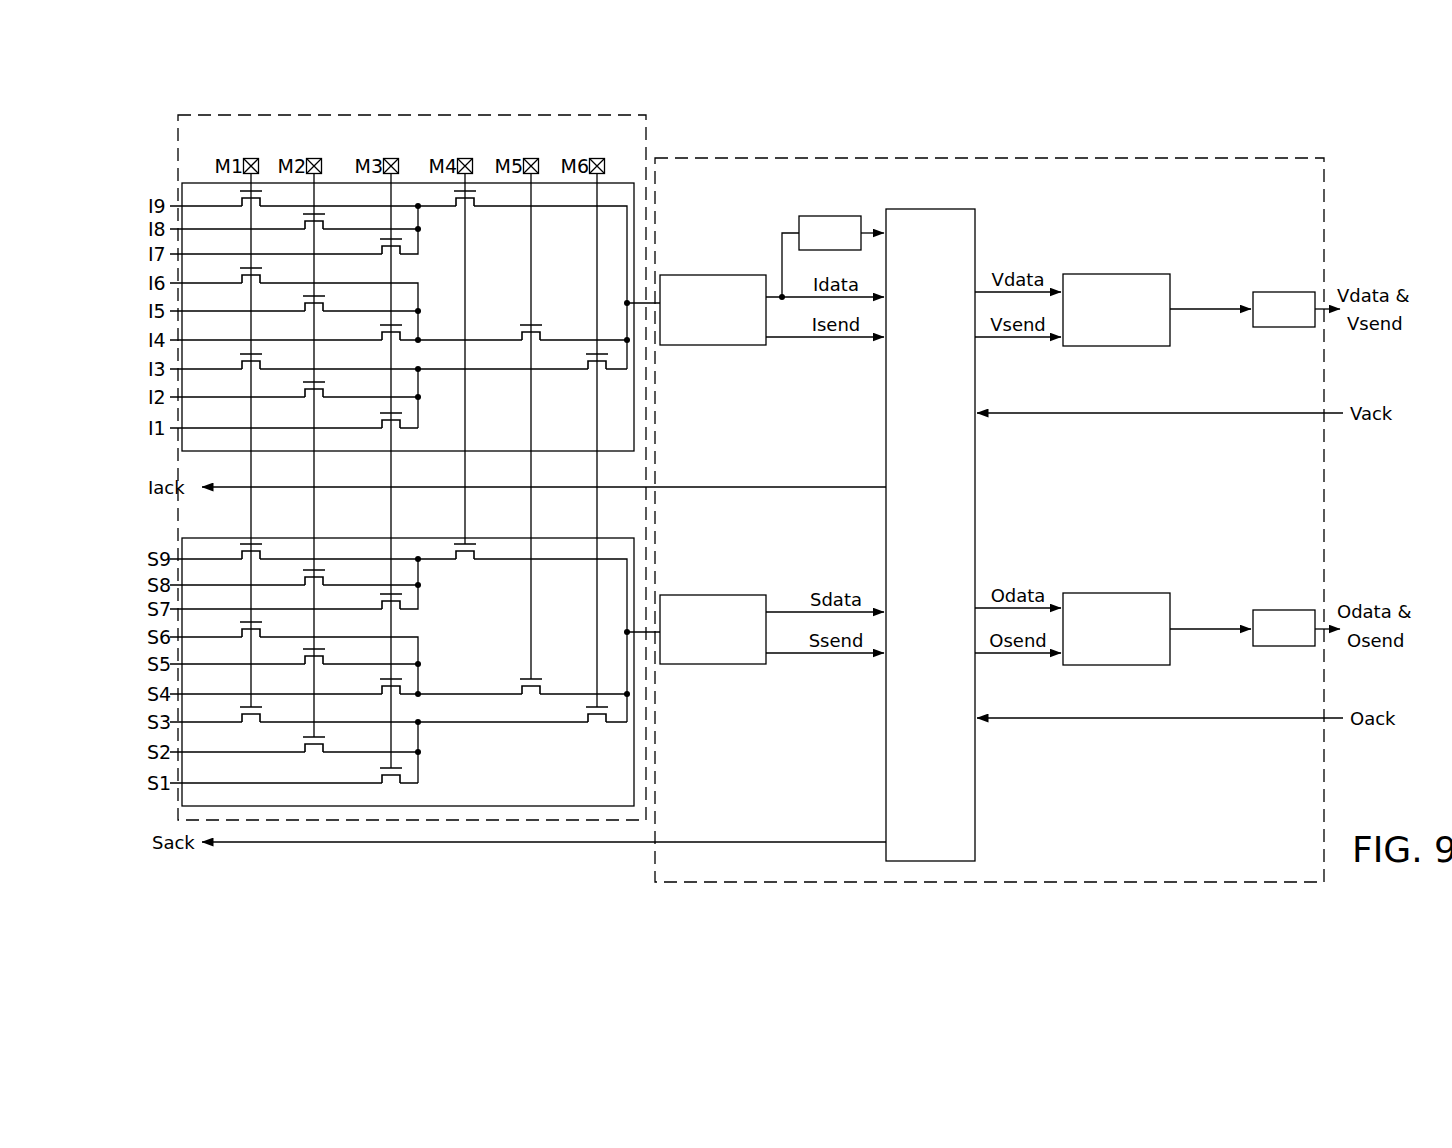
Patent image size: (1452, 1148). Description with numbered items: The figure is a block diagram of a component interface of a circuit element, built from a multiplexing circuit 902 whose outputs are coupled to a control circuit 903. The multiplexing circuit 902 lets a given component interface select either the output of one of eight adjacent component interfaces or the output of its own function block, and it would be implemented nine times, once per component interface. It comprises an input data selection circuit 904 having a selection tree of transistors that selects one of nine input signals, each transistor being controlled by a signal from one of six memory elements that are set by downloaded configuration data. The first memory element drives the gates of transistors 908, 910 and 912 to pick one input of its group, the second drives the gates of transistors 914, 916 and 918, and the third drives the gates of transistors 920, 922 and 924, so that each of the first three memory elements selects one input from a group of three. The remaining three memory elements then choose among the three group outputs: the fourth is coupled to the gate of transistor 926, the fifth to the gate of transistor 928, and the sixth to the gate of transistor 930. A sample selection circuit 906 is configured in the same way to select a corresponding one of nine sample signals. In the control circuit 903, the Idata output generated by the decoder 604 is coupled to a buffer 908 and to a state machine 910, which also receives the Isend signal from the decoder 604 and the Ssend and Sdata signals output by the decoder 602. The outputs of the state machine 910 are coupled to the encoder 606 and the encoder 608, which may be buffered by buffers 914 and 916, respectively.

The multiplexing circuit 902 is at (648, 133).
The control circuit 903 is at (1326, 207).
The input data selection circuit 904 is at (640, 162).
The sample selection circuit 906 is at (636, 518).
The transistor / buffer 908 is at (247, 373).
The transistor / state machine 910 is at (247, 286).
The transistor 912 is at (247, 209).
The transistor / buffer 914 is at (328, 391).
The transistor / buffer 916 is at (330, 304).
The transistor 918 is at (330, 226).
The transistor 920 is at (382, 424).
The transistor 922 is at (382, 336).
The transistor 924 is at (382, 250).
The transistor 926 is at (478, 208).
The transistor 928 is at (523, 332).
The transistor 930 is at (589, 362).
The decoder 602 is at (784, 577).
The decoder 604 is at (762, 257).
The encoder 606 is at (1132, 274).
The encoder 608 is at (1132, 593).